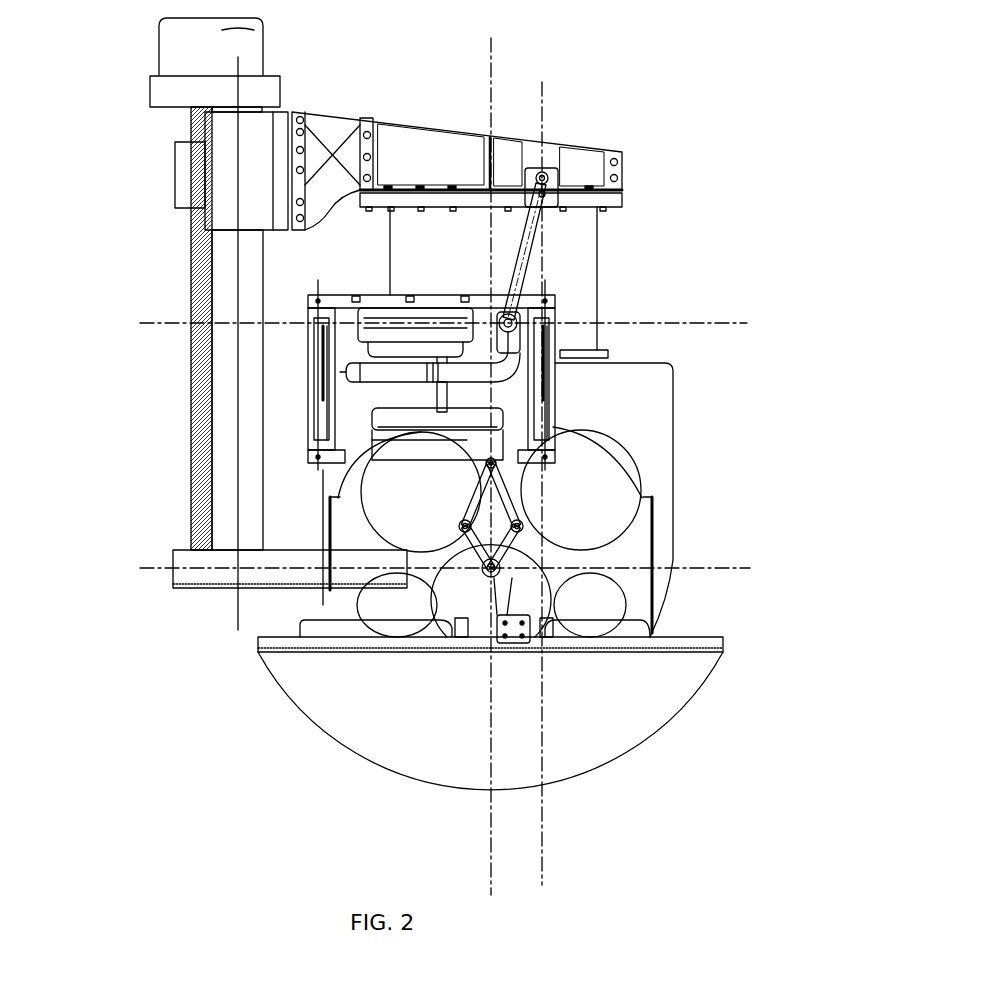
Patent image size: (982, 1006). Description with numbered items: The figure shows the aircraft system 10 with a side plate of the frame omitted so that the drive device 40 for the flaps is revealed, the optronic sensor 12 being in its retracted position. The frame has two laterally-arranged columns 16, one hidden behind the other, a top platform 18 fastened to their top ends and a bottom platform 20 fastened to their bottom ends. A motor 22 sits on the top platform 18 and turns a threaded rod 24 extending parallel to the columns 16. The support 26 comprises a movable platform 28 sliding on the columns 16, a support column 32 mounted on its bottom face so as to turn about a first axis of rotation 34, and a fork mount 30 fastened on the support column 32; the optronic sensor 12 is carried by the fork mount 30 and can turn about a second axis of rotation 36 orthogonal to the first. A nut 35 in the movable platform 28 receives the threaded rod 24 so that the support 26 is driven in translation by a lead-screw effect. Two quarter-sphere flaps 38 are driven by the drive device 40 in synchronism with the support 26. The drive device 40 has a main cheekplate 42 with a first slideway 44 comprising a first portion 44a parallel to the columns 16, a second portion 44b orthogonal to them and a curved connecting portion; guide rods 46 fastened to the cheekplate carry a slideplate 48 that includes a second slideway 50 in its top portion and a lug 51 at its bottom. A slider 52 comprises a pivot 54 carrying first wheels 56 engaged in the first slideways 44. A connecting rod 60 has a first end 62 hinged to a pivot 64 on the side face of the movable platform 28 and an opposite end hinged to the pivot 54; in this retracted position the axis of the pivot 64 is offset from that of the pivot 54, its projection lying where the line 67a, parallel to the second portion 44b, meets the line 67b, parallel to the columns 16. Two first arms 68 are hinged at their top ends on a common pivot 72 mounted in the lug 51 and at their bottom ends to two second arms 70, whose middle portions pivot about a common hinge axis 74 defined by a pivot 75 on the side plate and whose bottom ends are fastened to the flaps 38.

The aircraft system 10 is at (660, 72).
The optronic sensor 12 is at (632, 600).
The columns 16 is at (215, 300).
The top platform 18 is at (165, 95).
The bottom platform 20 is at (190, 575).
The motor 22 is at (173, 37).
The threaded rod 24 is at (197, 262).
The support 26 is at (624, 152).
The movable platform 28 is at (628, 200).
The fork mount 30 is at (655, 432).
The support column 32 is at (598, 272).
The first axis of rotation 34 is at (497, 62).
The nut 35 is at (180, 181).
The second axis of rotation 36 is at (712, 568).
The flaps 38 is at (365, 707).
The drive device 40 is at (552, 473).
The main cheekplate 42 is at (655, 368).
The first slideway 44 is at (348, 380).
The first portion of the first slideway 44a is at (580, 355).
The second portion of the first slideway 44b is at (388, 372).
The guide rods 46 is at (318, 437).
The slideplate 48 is at (378, 430).
The second slideway 50 is at (378, 307).
The lug 51 is at (480, 452).
The slider 52 is at (500, 311).
The pivot 54 is at (520, 322).
The first wheels 56 is at (522, 315).
The connecting rod 60 is at (528, 250).
The first end of the connecting rod 62 is at (560, 194).
The pivot 64 is at (548, 172).
The line 67a is at (710, 323).
The line 67b is at (550, 118).
The first arms 68 is at (480, 490).
The second arms 70 is at (492, 622).
The common pivot 72 is at (480, 477).
The common hinge axis 74 is at (502, 576).
The pivot 75 is at (500, 566).